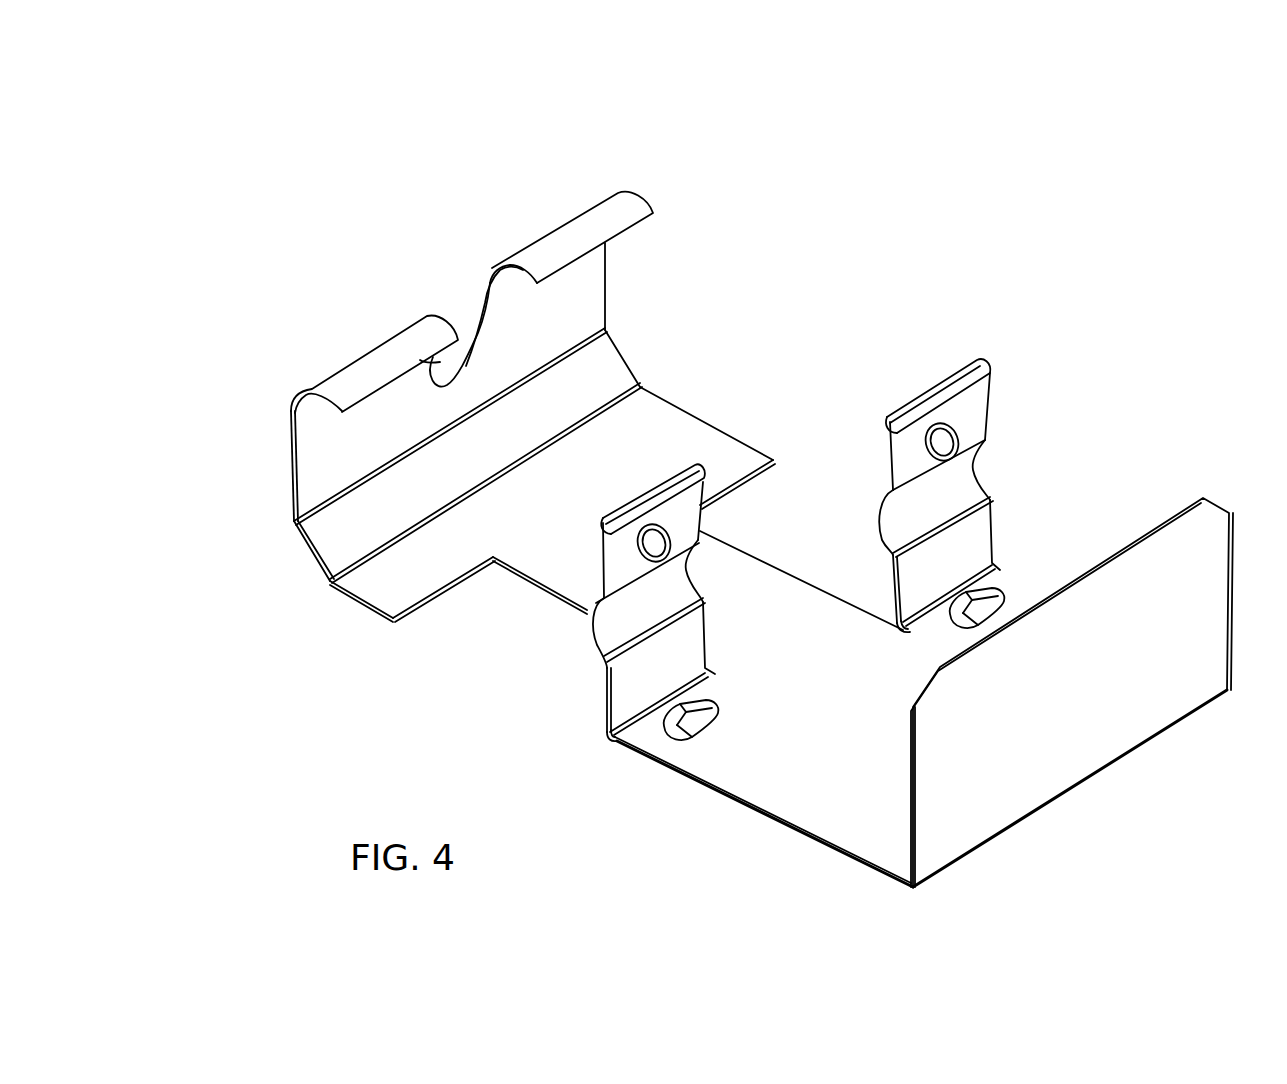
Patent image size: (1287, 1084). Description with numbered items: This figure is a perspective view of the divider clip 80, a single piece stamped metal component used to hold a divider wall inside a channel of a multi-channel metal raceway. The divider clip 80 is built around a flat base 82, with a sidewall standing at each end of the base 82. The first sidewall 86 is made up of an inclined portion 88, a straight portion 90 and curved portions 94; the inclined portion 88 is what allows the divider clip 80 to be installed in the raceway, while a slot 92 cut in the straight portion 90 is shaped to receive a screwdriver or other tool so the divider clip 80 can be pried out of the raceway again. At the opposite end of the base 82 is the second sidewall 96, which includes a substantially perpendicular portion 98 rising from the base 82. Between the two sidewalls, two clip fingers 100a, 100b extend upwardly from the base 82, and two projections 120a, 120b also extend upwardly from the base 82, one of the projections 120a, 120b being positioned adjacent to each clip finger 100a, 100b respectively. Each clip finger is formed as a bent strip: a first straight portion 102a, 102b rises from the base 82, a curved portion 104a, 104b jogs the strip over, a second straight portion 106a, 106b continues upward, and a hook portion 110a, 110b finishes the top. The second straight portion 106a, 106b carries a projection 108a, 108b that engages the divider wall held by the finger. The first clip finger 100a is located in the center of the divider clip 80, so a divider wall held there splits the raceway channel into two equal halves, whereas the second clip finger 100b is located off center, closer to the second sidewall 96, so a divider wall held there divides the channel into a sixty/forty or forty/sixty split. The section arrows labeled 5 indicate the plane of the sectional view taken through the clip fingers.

The divider clip 80 is at (827, 257).
The base 82 is at (377, 597).
The first sidewall 86 is at (618, 345).
The inclined portion 88 is at (307, 553).
The straight portion 90 is at (290, 470).
The slot 92 is at (462, 340).
The curved portions 94 is at (560, 223).
The second sidewall 96 is at (907, 825).
The substantially perpendicular portion 98 is at (980, 742).
The clip finger 100a is at (603, 683).
The clip finger 100b is at (988, 517).
The first straight portion 102a is at (611, 700).
The first straight portion 102b is at (992, 558).
The curved portion 104a is at (597, 633).
The curved portion 104b is at (985, 480).
The second straight portion 106a is at (597, 593).
The second straight portion 106b is at (993, 405).
The projection 108a is at (658, 543).
The projection 108b is at (950, 442).
The hook portion 110a is at (693, 462).
The hook portion 110b is at (961, 365).
The projection 120a is at (670, 730).
The projection 120b is at (993, 600).
The section line 5 is at (647, 495).